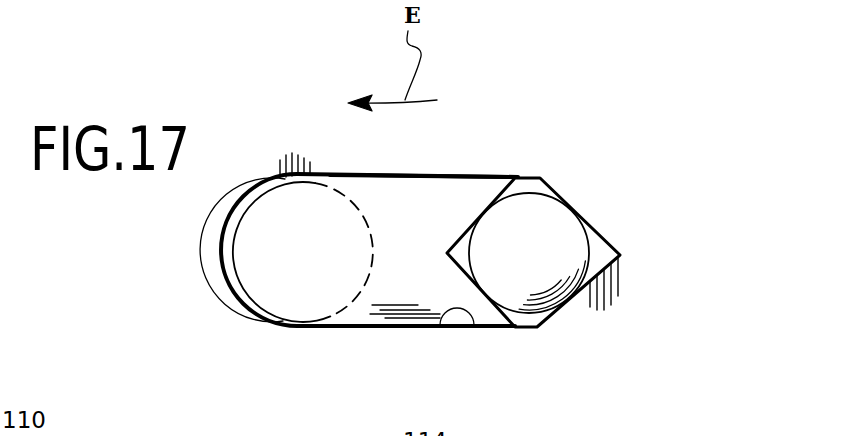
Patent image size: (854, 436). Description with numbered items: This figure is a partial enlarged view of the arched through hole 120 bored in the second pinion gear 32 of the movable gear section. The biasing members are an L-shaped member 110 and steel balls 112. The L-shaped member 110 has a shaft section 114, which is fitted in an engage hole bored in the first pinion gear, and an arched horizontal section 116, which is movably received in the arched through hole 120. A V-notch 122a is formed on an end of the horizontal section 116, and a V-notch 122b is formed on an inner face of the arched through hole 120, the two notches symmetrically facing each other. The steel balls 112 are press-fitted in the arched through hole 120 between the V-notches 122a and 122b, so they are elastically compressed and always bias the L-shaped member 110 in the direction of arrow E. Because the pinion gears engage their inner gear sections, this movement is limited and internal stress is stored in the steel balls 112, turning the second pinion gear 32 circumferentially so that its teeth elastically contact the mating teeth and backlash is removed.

The second pinion gear 32 is at (577, 170).
The L-shaped member 110 is at (392, 275).
The steel balls 112 is at (550, 244).
The shaft section 114 is at (362, 212).
The arched horizontal section 116 is at (437, 207).
The arched through hole 120 is at (477, 327).
The V-notch 122a is at (466, 265).
The V-notch 122b is at (605, 258).